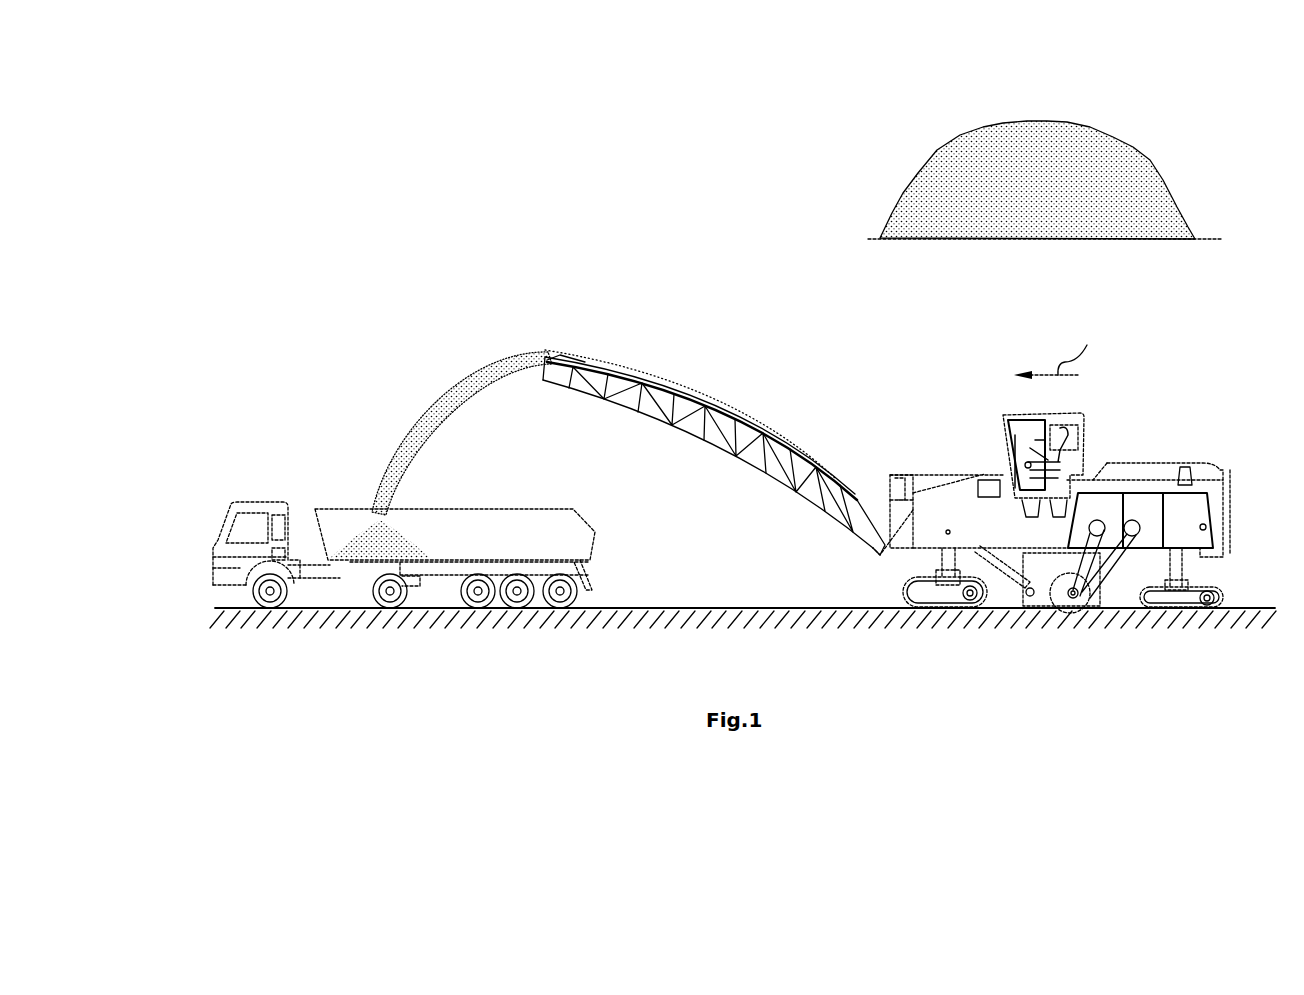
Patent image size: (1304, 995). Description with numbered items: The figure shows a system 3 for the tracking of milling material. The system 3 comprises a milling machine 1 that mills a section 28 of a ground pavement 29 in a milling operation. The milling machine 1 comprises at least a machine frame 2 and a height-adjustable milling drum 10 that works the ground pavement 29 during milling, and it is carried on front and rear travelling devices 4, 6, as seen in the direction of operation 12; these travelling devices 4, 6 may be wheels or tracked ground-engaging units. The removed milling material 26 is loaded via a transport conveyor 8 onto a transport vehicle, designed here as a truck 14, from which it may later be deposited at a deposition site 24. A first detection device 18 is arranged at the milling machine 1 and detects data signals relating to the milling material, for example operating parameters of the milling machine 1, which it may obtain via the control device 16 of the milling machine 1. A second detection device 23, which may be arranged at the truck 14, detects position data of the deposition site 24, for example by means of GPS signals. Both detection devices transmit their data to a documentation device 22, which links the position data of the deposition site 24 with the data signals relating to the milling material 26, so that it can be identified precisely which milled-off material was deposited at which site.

The milling machine 1 is at (1048, 511).
The machine frame 2 is at (980, 535).
The system for the tracking of milling material 3 is at (714, 407).
The front travelling device 4 is at (900, 592).
The rear travelling device 6 is at (1223, 600).
The transport conveyor 8 is at (723, 416).
The milling drum 10 is at (1040, 602).
The direction of operation 12 is at (1059, 350).
The truck 14 is at (404, 521).
The control device 16 is at (1000, 440).
The first detection device 18 is at (1005, 436).
The documentation device 22 is at (990, 488).
The second detection device 23 is at (290, 548).
The deposition site 24 is at (1108, 172).
The milling material 26 is at (441, 400).
The section 28 is at (942, 636).
The ground pavement 29 is at (822, 618).